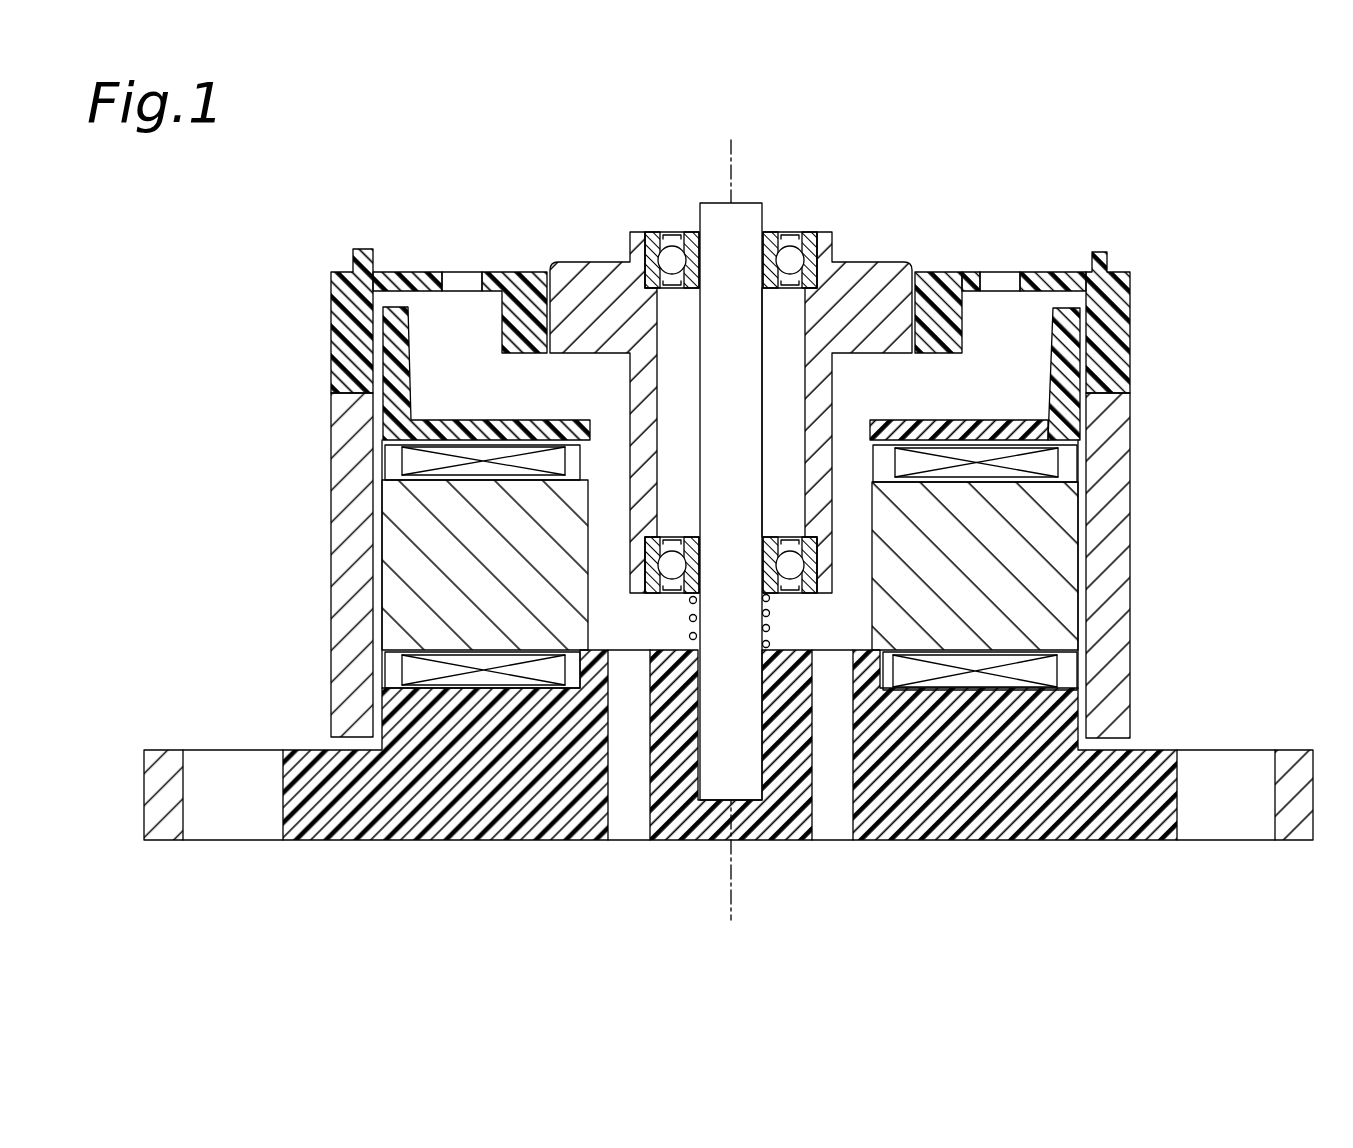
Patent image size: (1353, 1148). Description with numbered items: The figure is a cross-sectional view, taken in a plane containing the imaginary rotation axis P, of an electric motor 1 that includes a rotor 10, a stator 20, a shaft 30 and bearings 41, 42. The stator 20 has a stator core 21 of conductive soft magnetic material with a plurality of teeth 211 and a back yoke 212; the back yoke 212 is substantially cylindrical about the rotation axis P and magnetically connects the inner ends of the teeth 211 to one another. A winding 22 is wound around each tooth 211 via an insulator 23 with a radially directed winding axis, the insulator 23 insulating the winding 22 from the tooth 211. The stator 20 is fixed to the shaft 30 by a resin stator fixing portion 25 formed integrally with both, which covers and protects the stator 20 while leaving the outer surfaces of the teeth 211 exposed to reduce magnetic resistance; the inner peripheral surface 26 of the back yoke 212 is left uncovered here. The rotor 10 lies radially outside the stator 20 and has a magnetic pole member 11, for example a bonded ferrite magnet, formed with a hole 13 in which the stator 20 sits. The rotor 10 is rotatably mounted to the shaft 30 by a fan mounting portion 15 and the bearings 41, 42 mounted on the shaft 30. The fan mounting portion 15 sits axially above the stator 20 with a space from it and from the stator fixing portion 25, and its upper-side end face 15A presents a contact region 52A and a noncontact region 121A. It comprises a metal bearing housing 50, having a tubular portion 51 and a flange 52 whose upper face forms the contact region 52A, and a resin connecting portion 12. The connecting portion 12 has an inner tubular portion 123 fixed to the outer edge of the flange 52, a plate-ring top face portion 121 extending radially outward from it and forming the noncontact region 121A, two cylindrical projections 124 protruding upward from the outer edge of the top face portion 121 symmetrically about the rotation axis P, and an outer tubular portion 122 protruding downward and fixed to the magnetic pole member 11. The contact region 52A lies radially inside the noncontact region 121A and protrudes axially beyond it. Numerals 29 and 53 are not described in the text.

The electric motor 1 is at (495, 228).
The imaginary rotation axis P is at (730, 513).
The rotor 10 is at (1175, 542).
The magnetic pole member 11 is at (1113, 708).
The connecting portion 12 is at (1110, 178).
The top face portion 121 is at (1013, 323).
The noncontact region 121A is at (417, 270).
The outer tubular portion 122 is at (1100, 300).
The inner tubular portion 123 is at (948, 305).
The projection 124 is at (366, 249).
The hole 13 is at (1085, 393).
The fan mounting portion 15 is at (863, 128).
The upper-side end face 15A is at (1005, 342).
The stator 20 is at (1018, 715).
The stator core 21 is at (1222, 572).
The tooth 211 is at (1052, 590).
The back yoke 212 is at (880, 625).
The winding 22 is at (1052, 463).
The insulator 23 is at (1070, 473).
The stator fixing portion 25 is at (905, 430).
The inner peripheral surface 26 is at (870, 520).
The mounting flange 29 is at (1277, 797).
The shaft 30 is at (713, 208).
The bearing 41 is at (813, 232).
The bearing 42 is at (812, 593).
The bearing housing 50 is at (933, 178).
The tubular portion 51 is at (818, 397).
The flange 52 is at (893, 305).
The contact region 52A is at (585, 262).
The sleeve 53 is at (793, 470).